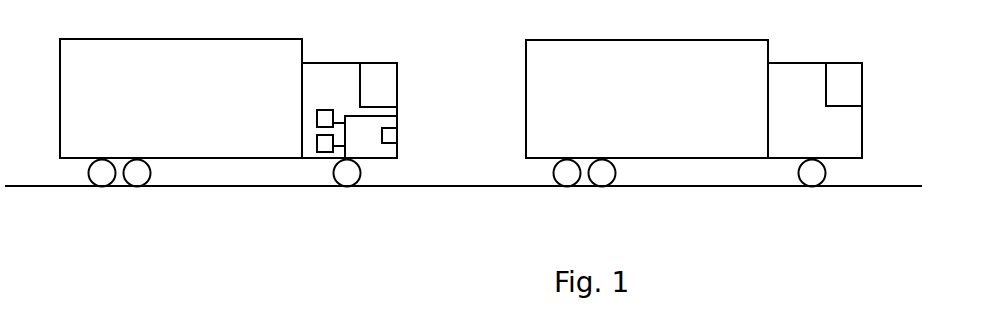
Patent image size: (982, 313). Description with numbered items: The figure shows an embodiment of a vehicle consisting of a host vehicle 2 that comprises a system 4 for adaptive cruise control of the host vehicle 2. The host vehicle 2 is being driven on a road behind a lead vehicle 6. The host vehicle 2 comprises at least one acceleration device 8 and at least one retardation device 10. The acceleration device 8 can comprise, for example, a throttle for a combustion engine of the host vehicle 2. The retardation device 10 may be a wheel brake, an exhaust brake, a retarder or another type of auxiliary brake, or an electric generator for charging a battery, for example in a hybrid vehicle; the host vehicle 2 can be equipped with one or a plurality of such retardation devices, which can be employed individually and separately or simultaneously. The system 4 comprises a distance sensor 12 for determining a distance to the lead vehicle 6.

The host vehicle 2 is at (175, 142).
The system for adaptive cruise control 4 is at (370, 147).
The lead vehicle 6 is at (676, 136).
The acceleration device 8 is at (325, 118).
The retardation device 10 is at (325, 147).
The distance sensor 12 is at (393, 137).